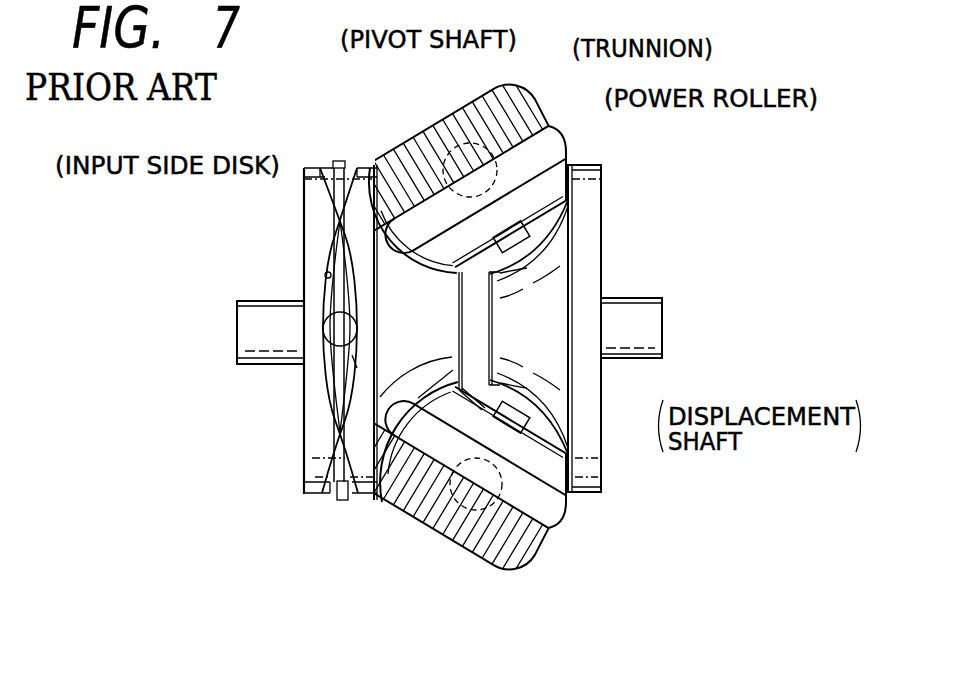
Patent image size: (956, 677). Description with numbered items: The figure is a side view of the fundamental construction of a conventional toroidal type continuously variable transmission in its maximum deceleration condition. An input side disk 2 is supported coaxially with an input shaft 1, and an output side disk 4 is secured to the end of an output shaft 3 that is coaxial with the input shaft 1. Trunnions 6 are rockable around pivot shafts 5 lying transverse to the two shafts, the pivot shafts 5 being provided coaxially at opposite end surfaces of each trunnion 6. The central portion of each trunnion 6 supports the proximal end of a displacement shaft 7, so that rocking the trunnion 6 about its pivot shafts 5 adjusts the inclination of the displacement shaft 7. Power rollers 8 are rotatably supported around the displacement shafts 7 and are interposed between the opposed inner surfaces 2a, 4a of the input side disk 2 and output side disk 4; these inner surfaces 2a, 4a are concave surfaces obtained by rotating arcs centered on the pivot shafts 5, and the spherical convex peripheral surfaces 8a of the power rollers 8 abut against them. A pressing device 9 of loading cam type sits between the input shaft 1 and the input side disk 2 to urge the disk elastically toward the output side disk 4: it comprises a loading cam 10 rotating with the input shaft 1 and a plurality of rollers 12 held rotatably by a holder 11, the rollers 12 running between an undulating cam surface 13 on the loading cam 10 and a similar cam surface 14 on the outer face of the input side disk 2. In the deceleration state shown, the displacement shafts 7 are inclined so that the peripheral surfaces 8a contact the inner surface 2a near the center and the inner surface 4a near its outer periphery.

The input shaft 1 is at (243, 322).
The input side disk 2 is at (333, 206).
The inner surface of input side disk 2a is at (384, 508).
The output shaft 3 is at (657, 333).
The output side disk 4 is at (590, 276).
The inner surface of output side disk 4a is at (507, 263).
The pivot shaft 5 is at (438, 106).
The trunnion 6 is at (512, 95).
The displacement shaft 7 is at (545, 252).
The power roller 8 is at (565, 149).
The peripheral surface of power roller 8a is at (442, 403).
The pressing device 9 is at (323, 166).
The loading cam 10 is at (313, 230).
The holder 11 is at (340, 158).
The rollers 12 is at (352, 158).
The cam surface 13 is at (328, 275).
The cam surface 14 is at (357, 366).